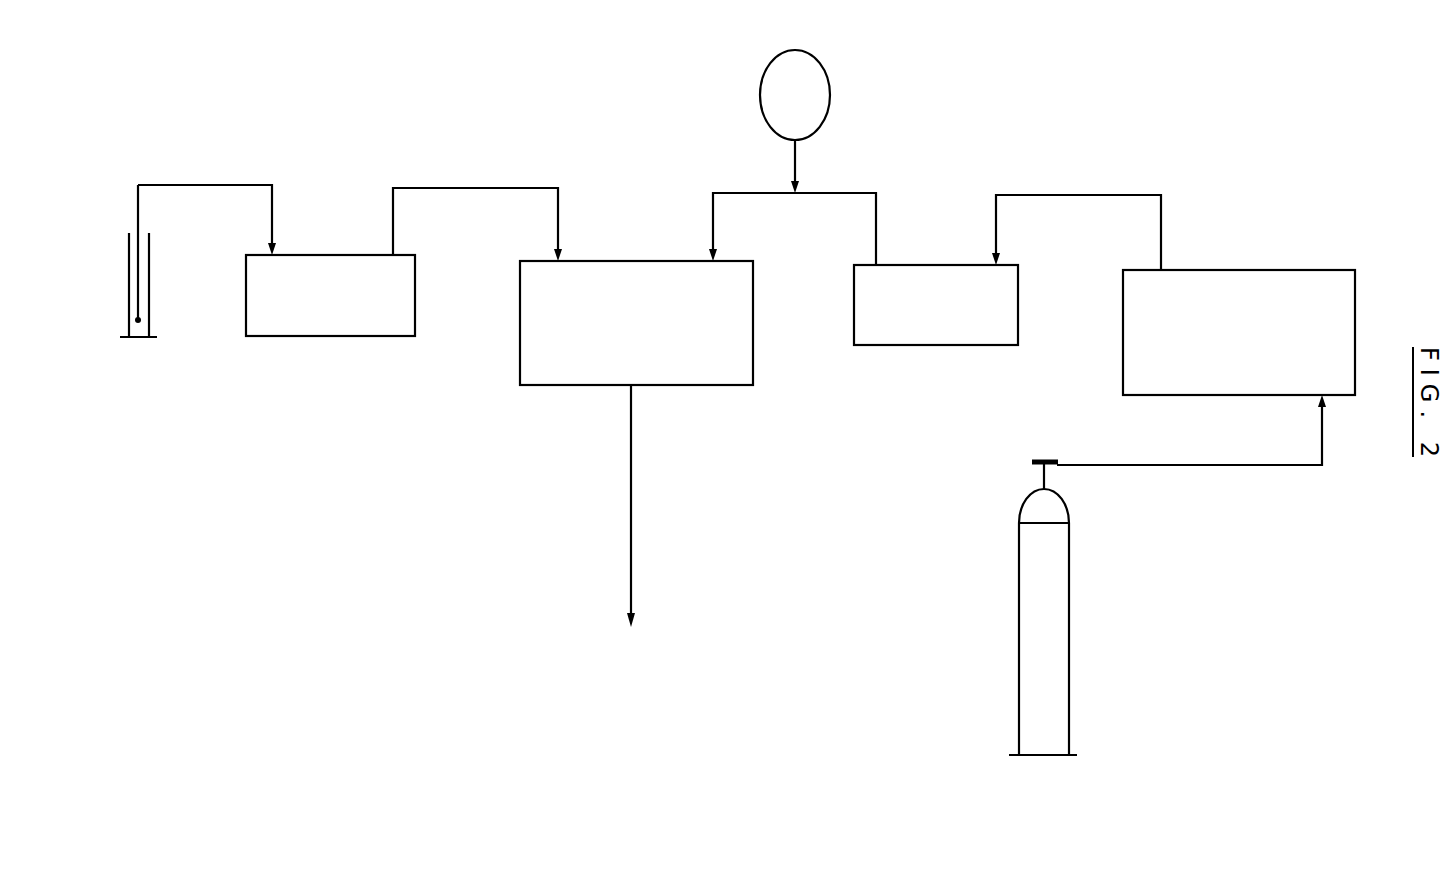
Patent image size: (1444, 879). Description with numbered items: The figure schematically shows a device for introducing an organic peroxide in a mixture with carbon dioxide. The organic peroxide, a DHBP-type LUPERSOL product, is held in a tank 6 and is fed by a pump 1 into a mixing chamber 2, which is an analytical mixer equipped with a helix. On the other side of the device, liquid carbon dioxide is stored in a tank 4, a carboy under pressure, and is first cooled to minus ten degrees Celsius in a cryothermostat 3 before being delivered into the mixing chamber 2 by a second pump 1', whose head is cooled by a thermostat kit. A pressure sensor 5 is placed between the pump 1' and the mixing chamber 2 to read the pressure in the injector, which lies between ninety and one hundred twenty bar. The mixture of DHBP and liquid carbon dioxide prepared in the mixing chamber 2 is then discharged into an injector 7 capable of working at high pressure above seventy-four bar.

The pump 1 is at (404, 262).
The pump 1' is at (1007, 270).
The mixing chamber 2 is at (698, 289).
The cryothermostat 3 is at (1239, 332).
The liquid carbon dioxide tank 4 is at (1167, 575).
The pressure sensor 5 is at (795, 121).
The tank 6 is at (197, 290).
The injector 7 is at (634, 528).